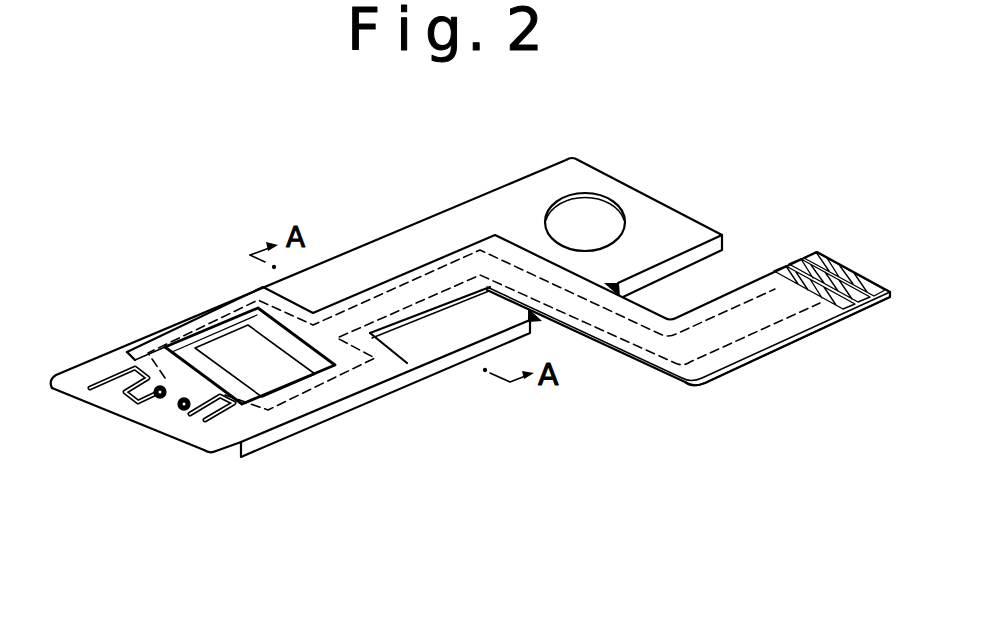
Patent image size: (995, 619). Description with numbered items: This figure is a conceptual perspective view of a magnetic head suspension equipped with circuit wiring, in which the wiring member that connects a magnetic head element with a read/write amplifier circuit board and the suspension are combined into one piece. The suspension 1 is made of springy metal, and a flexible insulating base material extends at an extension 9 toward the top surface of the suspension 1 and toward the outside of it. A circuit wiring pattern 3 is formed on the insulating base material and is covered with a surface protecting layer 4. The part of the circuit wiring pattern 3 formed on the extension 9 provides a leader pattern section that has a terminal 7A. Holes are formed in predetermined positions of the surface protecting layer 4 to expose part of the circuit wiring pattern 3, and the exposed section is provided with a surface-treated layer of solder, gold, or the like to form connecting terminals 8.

The suspension 1 is at (518, 188).
The circuit wiring pattern 3 is at (367, 303).
The surface protecting layer 4 is at (408, 278).
The terminal 7A is at (800, 290).
The connecting terminals 8 is at (160, 399).
The extension 9 is at (701, 382).